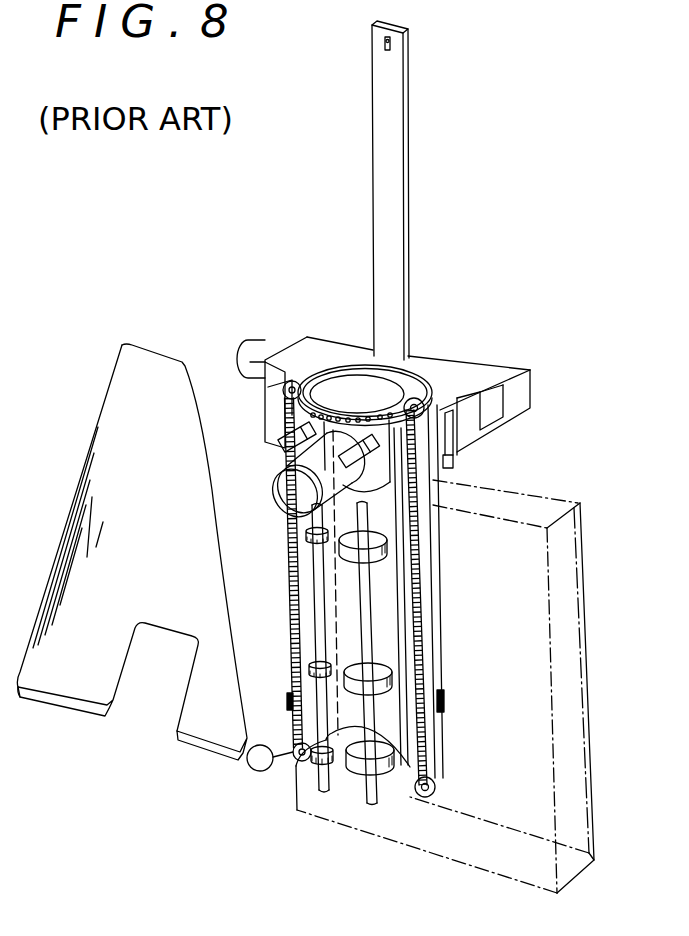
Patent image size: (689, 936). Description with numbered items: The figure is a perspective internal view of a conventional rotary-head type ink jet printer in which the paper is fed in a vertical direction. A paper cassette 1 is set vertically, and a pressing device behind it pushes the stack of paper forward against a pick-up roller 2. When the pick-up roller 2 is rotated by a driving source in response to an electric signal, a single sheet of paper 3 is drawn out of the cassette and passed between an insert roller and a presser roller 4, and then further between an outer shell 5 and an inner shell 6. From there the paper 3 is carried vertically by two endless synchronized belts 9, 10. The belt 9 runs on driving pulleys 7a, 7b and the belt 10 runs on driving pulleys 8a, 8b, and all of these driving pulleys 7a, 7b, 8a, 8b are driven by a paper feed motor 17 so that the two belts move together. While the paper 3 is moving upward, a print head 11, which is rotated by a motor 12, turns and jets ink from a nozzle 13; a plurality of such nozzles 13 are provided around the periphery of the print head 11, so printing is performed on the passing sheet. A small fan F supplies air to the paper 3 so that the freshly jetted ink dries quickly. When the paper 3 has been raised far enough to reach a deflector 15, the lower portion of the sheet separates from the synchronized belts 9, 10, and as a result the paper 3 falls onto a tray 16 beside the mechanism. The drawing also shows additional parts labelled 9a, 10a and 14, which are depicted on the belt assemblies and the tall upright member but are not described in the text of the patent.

The paper cassette 1 is at (584, 606).
The pick-up roller 2 is at (385, 548).
The paper 3 is at (410, 364).
The presser roller 4 is at (303, 538).
The outer shell 5 is at (407, 770).
The inner shell 6 is at (402, 762).
The driving pulley 7a is at (291, 380).
The driving pulley 7b is at (300, 762).
The driving pulley 8a is at (420, 402).
The driving pulley 8b is at (436, 787).
The endless synchronized belt 9 is at (288, 620).
The chain attachment 9a is at (288, 696).
The endless synchronized belt 10 is at (428, 625).
The chain attachment 10a is at (454, 464).
The print head 11 is at (350, 383).
The motor 12 is at (387, 470).
The nozzle 13 is at (312, 413).
The guide rod 14 is at (400, 190).
The deflector 15 is at (392, 44).
The tray 16 is at (112, 400).
The paper feed motor 17 is at (253, 770).
The small fan F is at (283, 494).